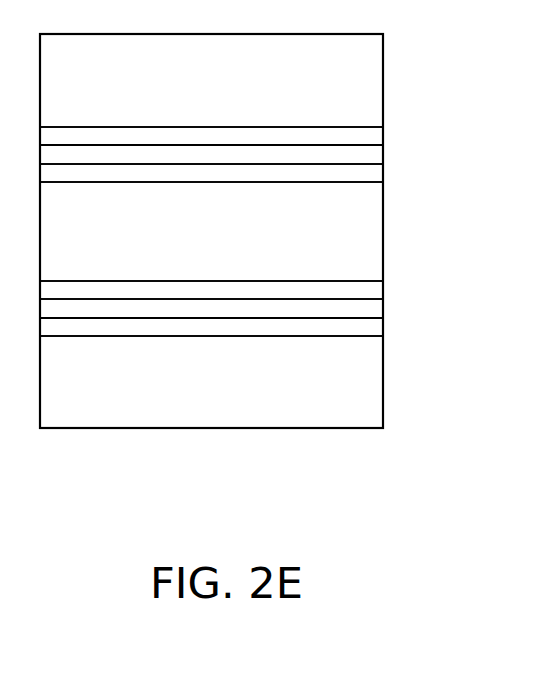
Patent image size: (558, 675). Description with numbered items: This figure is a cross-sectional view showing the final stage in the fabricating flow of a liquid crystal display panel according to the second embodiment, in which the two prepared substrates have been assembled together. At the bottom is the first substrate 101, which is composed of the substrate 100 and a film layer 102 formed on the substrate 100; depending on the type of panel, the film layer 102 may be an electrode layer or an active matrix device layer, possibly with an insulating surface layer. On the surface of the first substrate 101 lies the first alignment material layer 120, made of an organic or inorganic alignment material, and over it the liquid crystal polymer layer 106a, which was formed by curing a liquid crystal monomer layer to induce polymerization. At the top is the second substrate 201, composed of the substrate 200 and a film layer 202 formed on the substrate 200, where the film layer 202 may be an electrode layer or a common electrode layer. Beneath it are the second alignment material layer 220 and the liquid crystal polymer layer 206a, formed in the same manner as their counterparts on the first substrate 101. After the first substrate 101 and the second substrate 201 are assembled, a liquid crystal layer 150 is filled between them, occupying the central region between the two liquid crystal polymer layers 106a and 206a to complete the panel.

The substrate 100 is at (372, 375).
The film layer 102 is at (368, 327).
The first substrate 101 is at (479, 348).
The first alignment material layer 120 is at (368, 308).
The liquid crystal polymer layer 106a is at (368, 289).
The liquid crystal layer 150 is at (347, 232).
The liquid crystal polymer layer 206a is at (365, 173).
The second alignment material layer 220 is at (368, 155).
The film layer 202 is at (368, 138).
The substrate 200 is at (368, 89).
The second substrate 201 is at (479, 53).